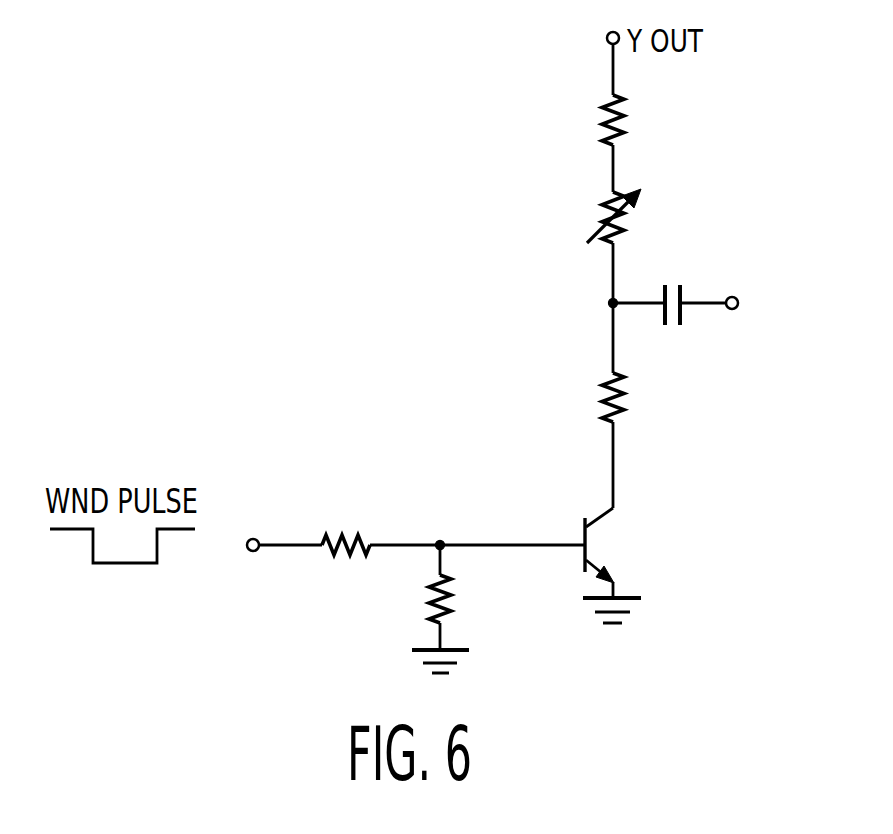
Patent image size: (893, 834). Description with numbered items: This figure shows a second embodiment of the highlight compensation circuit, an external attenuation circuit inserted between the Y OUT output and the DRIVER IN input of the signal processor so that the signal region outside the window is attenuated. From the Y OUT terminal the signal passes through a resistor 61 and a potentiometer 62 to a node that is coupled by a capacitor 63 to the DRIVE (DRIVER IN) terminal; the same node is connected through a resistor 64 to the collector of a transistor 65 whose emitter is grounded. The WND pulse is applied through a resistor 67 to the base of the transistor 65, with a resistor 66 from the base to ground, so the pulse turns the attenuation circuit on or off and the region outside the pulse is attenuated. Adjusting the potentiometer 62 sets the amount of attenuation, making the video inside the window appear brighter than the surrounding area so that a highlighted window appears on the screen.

The resistor 61 is at (595, 120).
The potentiometer 62 is at (600, 216).
The capacitor 63 is at (717, 325).
The resistor 64 is at (595, 397).
The transistor 65 is at (612, 565).
The resistor 66 is at (448, 609).
The resistor 67 is at (346, 525).